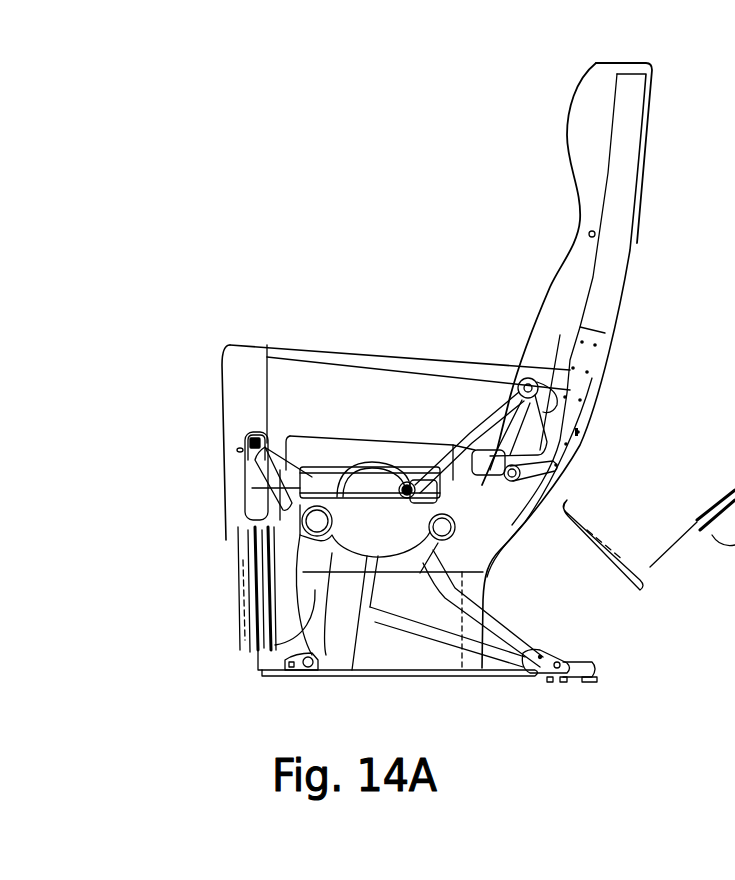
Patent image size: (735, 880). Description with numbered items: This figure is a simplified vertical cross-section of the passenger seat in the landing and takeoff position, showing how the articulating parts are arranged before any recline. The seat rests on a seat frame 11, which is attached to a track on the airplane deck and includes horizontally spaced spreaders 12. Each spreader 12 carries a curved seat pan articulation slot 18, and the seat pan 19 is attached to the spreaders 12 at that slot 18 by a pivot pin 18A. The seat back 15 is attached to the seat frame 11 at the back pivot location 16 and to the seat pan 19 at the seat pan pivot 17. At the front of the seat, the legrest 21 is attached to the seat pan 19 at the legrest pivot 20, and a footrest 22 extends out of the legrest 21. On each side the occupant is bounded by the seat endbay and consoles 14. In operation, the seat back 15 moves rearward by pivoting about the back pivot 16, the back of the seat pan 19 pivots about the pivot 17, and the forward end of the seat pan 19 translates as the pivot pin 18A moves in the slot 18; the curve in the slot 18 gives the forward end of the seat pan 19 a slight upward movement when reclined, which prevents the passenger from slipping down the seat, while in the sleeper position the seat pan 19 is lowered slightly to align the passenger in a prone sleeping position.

The seat frame 11 is at (490, 503).
The spreaders 12 is at (500, 625).
The seat endbay and consoles 14 is at (390, 400).
The seat back 15 is at (623, 140).
The back pivot location 16 is at (590, 395).
The seat pan pivot 17 is at (545, 470).
The seat pan articulation slot 18 is at (341, 438).
The pivot pin 18A is at (433, 473).
The seat pan 19 is at (316, 438).
The legrest pivot 20 is at (238, 451).
The legrest 21 is at (238, 527).
The footrest 22 is at (243, 615).